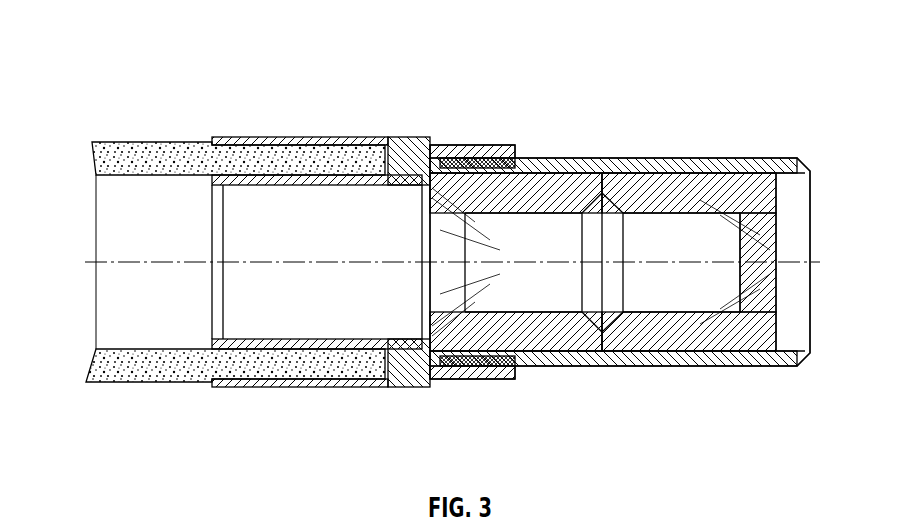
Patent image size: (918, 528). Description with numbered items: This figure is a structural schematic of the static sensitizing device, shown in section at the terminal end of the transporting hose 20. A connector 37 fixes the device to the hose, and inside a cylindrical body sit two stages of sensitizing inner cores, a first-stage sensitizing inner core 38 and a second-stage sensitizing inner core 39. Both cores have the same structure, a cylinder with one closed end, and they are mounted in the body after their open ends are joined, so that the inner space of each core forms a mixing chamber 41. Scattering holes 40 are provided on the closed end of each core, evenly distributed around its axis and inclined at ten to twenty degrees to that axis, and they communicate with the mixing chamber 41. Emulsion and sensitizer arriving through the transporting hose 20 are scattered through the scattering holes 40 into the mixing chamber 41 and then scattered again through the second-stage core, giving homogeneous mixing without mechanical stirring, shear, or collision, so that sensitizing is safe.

The transporting hose 20 is at (231, 196).
The connector 37 is at (449, 196).
The first-stage sensitizing inner core 38 is at (620, 192).
The second-stage sensitizing inner core 39 is at (706, 178).
The scattering holes 40 is at (821, 308).
The mixing chamber 41 is at (652, 335).